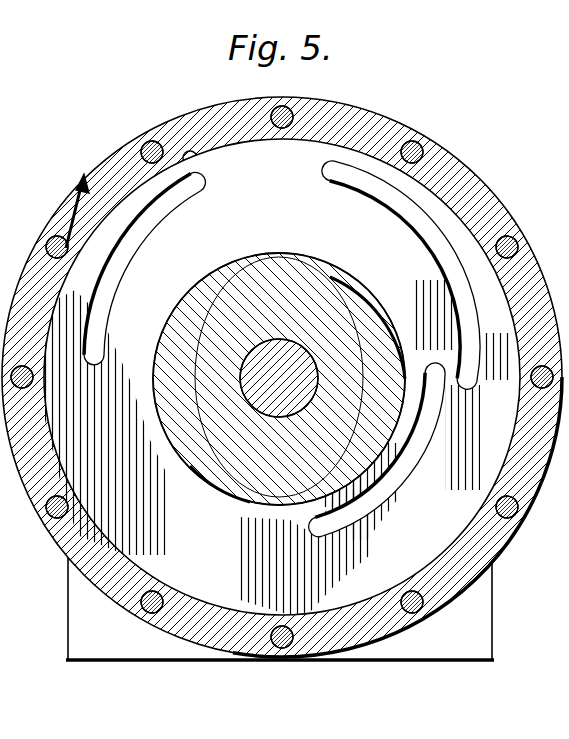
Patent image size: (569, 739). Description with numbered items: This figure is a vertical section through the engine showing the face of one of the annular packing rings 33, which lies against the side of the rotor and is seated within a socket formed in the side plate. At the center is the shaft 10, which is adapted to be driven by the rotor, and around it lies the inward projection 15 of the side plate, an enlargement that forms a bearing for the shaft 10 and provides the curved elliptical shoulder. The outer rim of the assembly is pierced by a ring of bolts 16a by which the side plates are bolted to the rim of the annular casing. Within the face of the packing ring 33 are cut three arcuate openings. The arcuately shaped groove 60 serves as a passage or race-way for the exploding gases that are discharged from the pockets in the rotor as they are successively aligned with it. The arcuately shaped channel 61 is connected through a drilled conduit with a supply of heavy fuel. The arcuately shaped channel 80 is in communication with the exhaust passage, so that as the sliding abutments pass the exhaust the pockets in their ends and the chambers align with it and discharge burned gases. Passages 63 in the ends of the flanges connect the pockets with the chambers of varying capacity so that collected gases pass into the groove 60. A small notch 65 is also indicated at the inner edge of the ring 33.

The packing ring 33 is at (300, 156).
The bolts 16a is at (143, 150).
The notch 65 is at (194, 152).
The passages 63 is at (44, 226).
The arcuately shaped channel 80 is at (115, 264).
The arcuately shaped groove 60 is at (398, 208).
The arcuately shaped channel 61 is at (398, 486).
The inward projections 15 is at (197, 297).
The shaft 10 is at (268, 404).